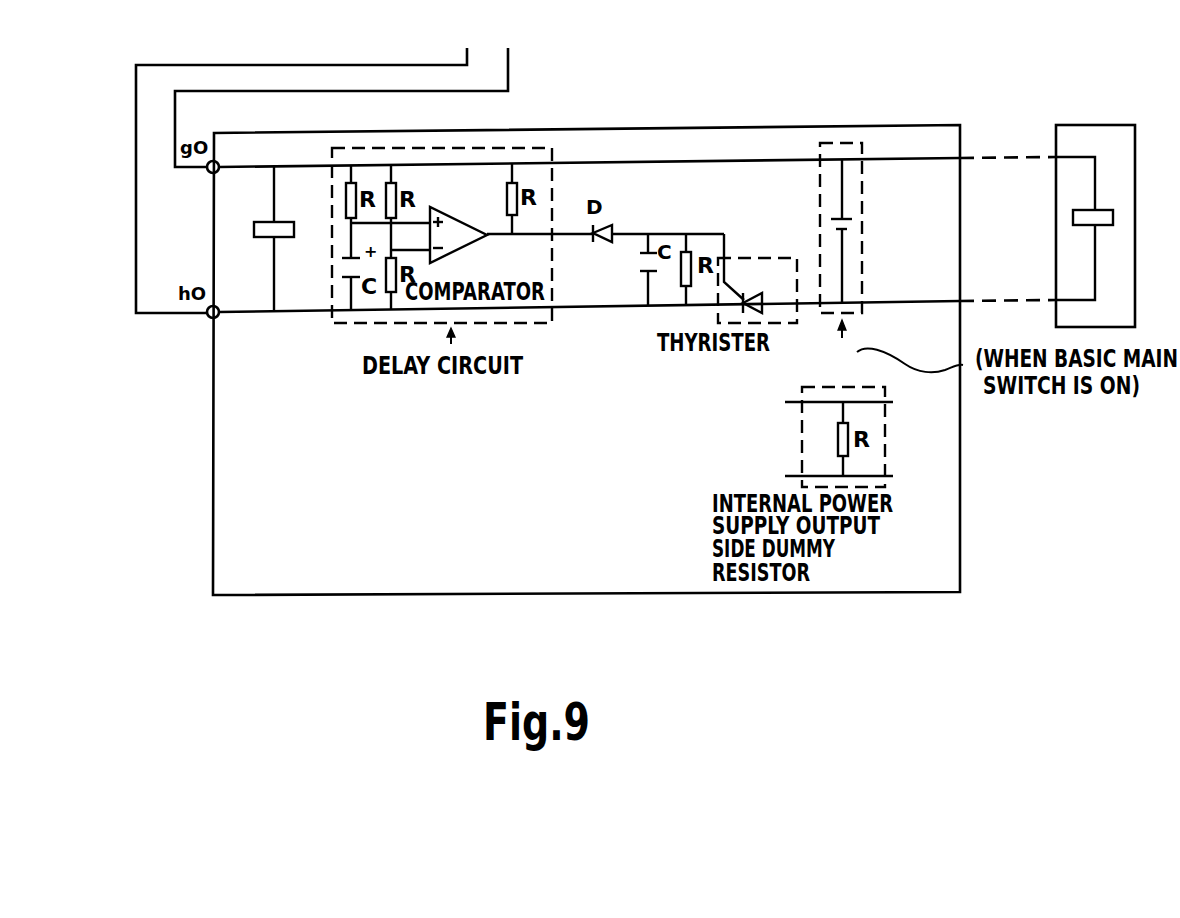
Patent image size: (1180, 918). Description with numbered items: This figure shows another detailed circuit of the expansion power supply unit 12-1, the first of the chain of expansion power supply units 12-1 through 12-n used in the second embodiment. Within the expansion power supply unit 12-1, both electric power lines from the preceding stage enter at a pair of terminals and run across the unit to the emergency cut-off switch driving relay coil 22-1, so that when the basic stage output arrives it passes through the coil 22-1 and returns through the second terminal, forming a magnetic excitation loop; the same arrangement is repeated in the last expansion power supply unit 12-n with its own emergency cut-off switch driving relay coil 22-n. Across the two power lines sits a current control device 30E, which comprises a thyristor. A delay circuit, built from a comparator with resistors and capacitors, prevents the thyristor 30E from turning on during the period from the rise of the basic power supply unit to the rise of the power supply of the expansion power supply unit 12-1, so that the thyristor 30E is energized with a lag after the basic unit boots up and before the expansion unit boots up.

The expansion power supply unit 12-1 is at (733, 128).
The expansion power supply unit 12-n is at (1089, 125).
The emergency cut-off switch driving relay coil 22-1 is at (257, 238).
The emergency cut-off switch driving relay coil 22-n is at (1073, 222).
The current control device 30E is at (748, 259).